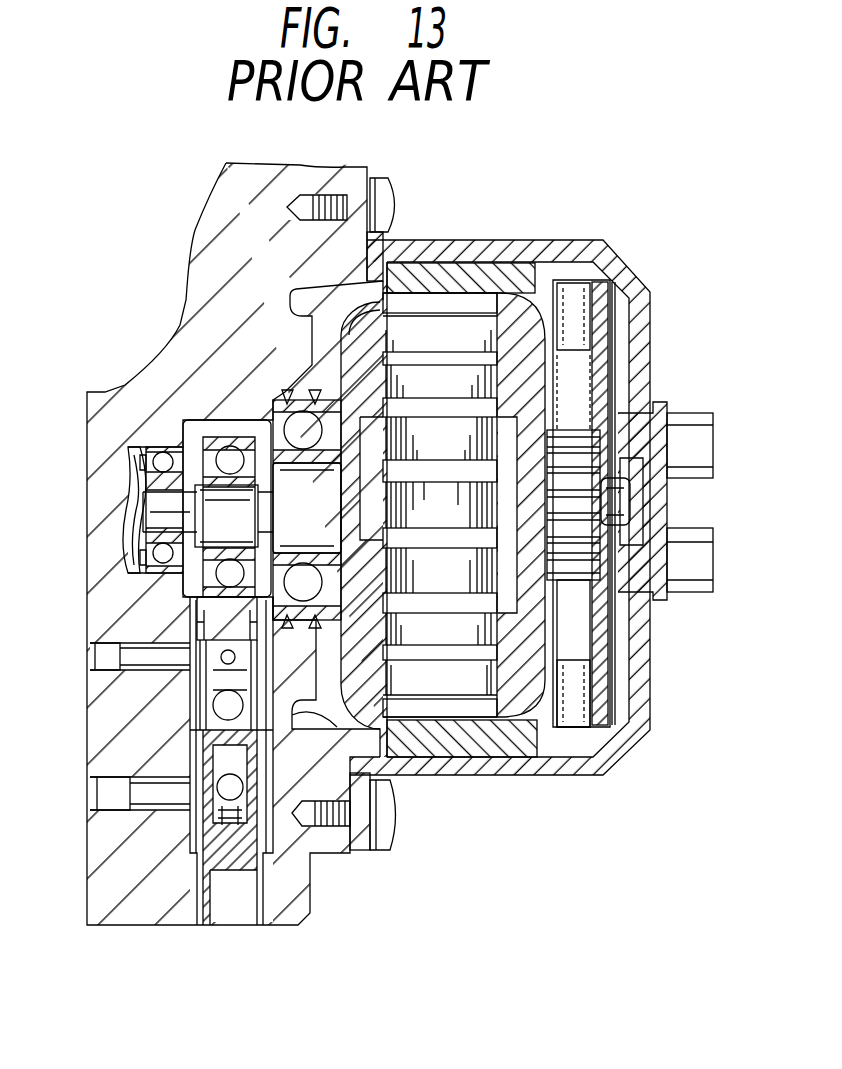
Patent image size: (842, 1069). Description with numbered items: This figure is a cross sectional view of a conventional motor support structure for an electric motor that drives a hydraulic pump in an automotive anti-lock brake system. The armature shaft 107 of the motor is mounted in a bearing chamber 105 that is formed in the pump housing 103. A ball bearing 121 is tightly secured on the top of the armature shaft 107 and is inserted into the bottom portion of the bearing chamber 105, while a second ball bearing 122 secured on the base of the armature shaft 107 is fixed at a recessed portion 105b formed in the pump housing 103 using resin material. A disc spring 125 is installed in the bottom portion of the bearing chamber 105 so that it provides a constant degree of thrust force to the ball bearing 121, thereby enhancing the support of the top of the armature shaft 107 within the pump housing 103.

The pump housing 103 is at (203, 226).
The bearing chamber 105 is at (203, 424).
The recessed portion 105b is at (290, 403).
The armature shaft 107 is at (212, 514).
The ball bearing 121 is at (130, 447).
The bearing 122 is at (280, 403).
The disc spring 125 is at (137, 463).